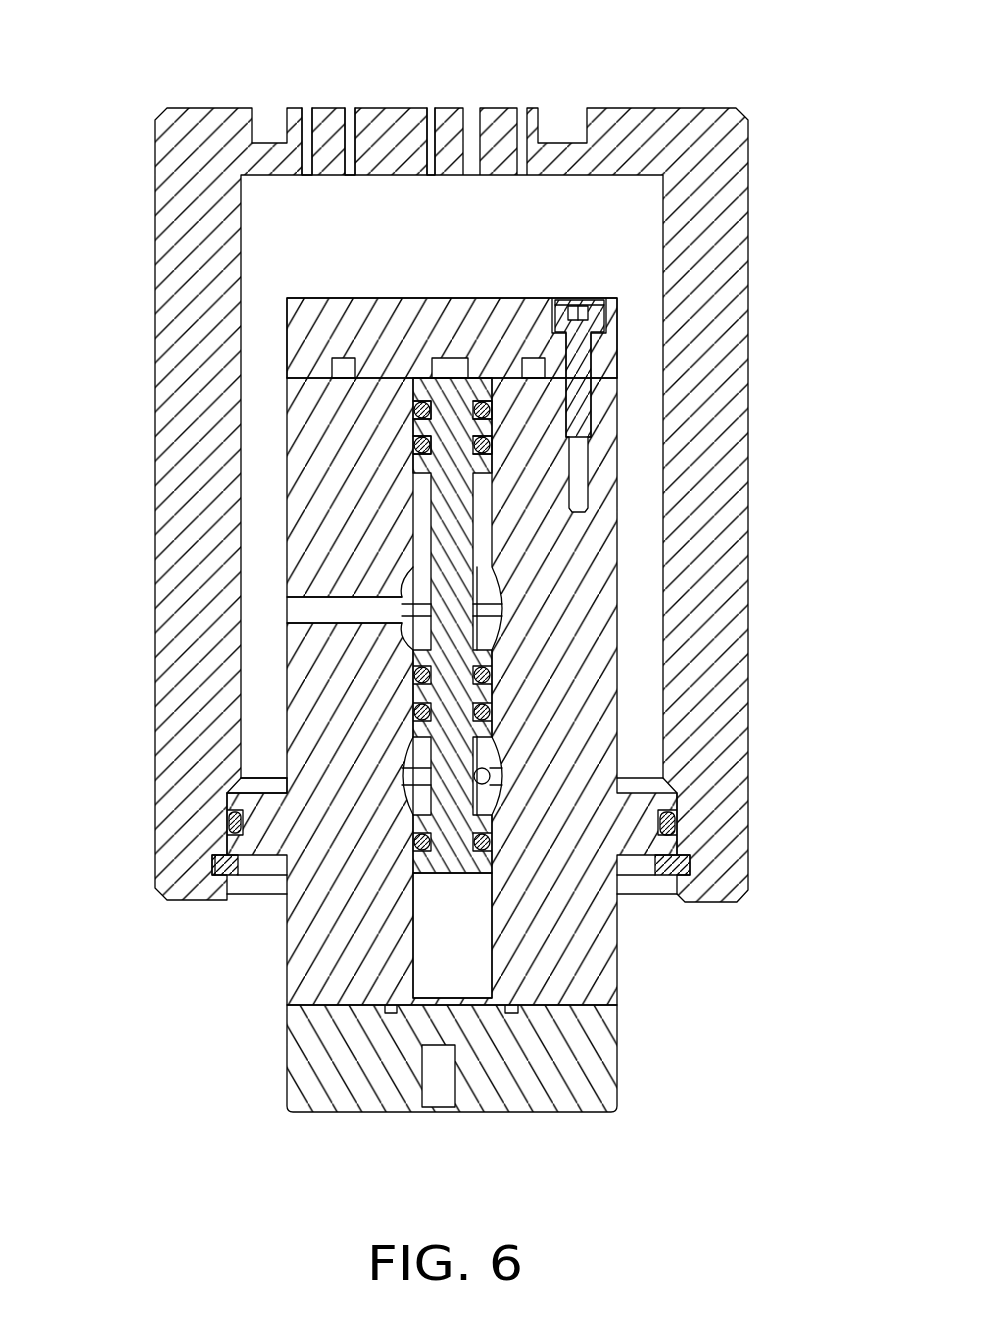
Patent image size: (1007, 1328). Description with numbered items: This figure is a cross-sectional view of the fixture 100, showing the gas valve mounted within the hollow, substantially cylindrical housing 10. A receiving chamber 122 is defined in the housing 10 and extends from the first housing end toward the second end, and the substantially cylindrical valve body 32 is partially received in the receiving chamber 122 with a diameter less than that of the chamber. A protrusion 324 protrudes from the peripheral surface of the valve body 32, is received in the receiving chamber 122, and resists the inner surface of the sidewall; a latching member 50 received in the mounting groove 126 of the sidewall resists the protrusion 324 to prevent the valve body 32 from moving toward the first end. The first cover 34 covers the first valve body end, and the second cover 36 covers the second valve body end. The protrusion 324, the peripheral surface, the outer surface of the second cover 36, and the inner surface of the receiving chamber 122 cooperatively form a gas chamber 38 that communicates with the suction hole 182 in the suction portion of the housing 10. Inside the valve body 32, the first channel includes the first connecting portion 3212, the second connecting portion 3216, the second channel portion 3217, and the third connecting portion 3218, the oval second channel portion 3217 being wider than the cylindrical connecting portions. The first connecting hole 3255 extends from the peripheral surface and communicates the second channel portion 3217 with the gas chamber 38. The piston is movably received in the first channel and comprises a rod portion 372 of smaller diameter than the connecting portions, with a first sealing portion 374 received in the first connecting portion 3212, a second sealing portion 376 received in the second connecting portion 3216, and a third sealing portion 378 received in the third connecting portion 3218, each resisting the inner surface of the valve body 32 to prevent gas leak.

The valve assembly 100 is at (500, 28).
The housing 10 is at (182, 204).
The gas chamber 38 is at (300, 263).
The suction hole 182 is at (350, 120).
The second cover 36 is at (500, 317).
The receiving chamber 122 is at (628, 294).
The valve body 32 is at (597, 615).
The rod portion 372 is at (455, 550).
The third connecting portion 3218 is at (427, 430).
The third sealing portion 378 is at (458, 435).
The second sealing portion 376 is at (460, 690).
The first sealing portion 374 is at (453, 848).
The first connecting hole 3255 is at (303, 617).
The second channel portion 3217 is at (488, 627).
The second connecting portion 3216 is at (237, 782).
The protrusion 324 is at (257, 833).
The mounting groove 126 is at (690, 865).
The latching member 50 is at (677, 873).
The first connecting portion 3212 is at (435, 977).
The first cover 34 is at (590, 1073).